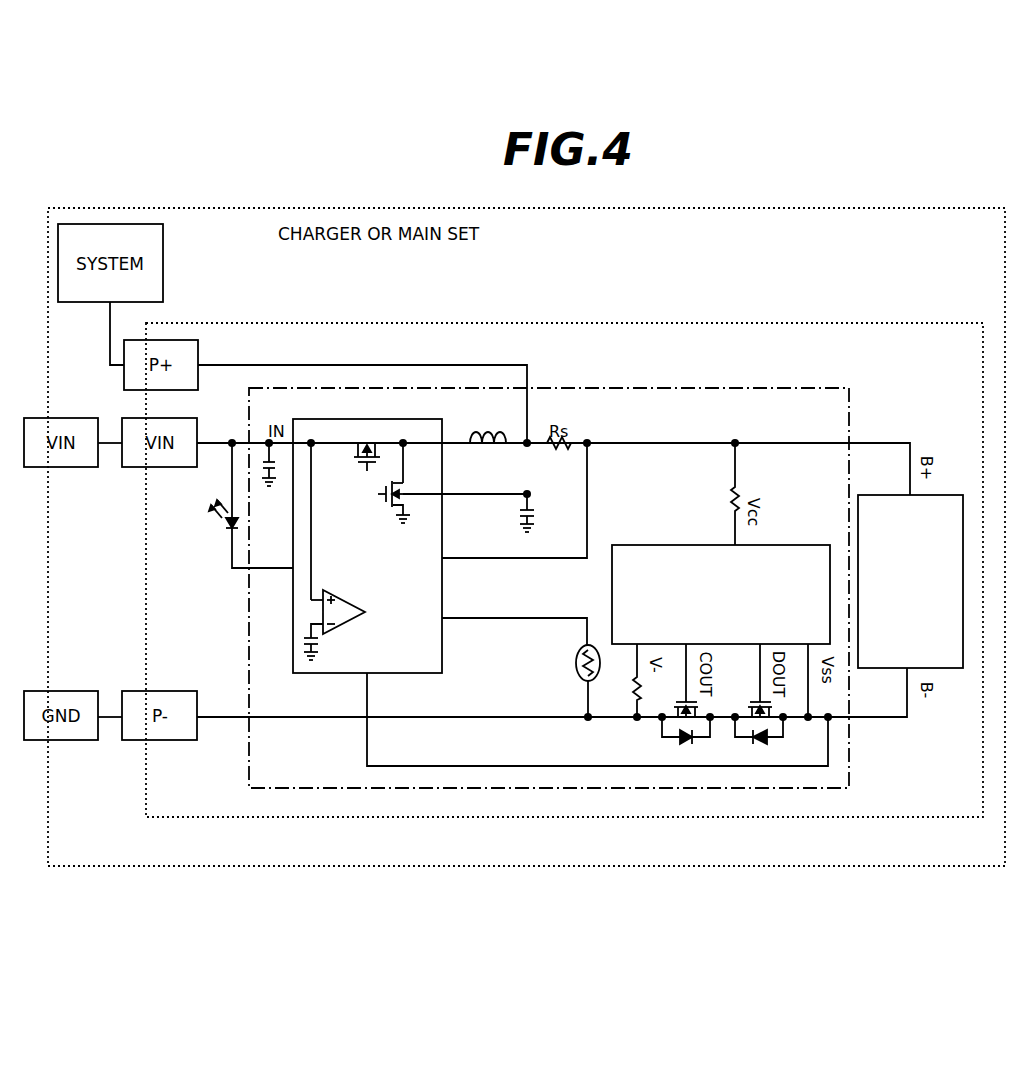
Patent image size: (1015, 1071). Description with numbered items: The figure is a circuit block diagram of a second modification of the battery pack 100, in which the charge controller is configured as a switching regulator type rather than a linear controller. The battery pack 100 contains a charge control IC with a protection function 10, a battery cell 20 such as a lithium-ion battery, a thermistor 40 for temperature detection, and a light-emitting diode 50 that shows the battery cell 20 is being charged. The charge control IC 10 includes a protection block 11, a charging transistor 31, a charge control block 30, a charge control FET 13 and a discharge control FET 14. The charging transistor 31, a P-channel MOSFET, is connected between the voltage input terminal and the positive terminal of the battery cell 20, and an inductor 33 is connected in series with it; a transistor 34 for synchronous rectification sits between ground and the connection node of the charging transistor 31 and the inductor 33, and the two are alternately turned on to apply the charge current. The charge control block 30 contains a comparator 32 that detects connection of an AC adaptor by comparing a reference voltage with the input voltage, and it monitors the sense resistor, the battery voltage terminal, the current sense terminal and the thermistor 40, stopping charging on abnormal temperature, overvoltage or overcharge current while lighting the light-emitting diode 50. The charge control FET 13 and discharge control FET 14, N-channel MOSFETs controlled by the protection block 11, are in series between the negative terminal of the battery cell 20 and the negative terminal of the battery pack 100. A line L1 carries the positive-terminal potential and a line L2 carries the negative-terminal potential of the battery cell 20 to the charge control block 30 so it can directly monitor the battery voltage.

The battery pack 100 is at (773, 323).
The charge control IC with a protection function 10 is at (850, 388).
The protection block 11 is at (668, 544).
The charge control FET 13 is at (678, 727).
The discharge control FET 14 is at (773, 727).
The battery cell 20 is at (922, 495).
The charge control block 30 is at (292, 660).
The charging transistor 31 is at (375, 442).
The comparator 32 is at (360, 614).
The inductor 33 is at (480, 432).
The transistor for synchronous rectification 34 is at (410, 496).
The thermistor 40 is at (573, 670).
The LED 50 is at (223, 535).
The line L1 is at (587, 500).
The line L2 is at (465, 765).